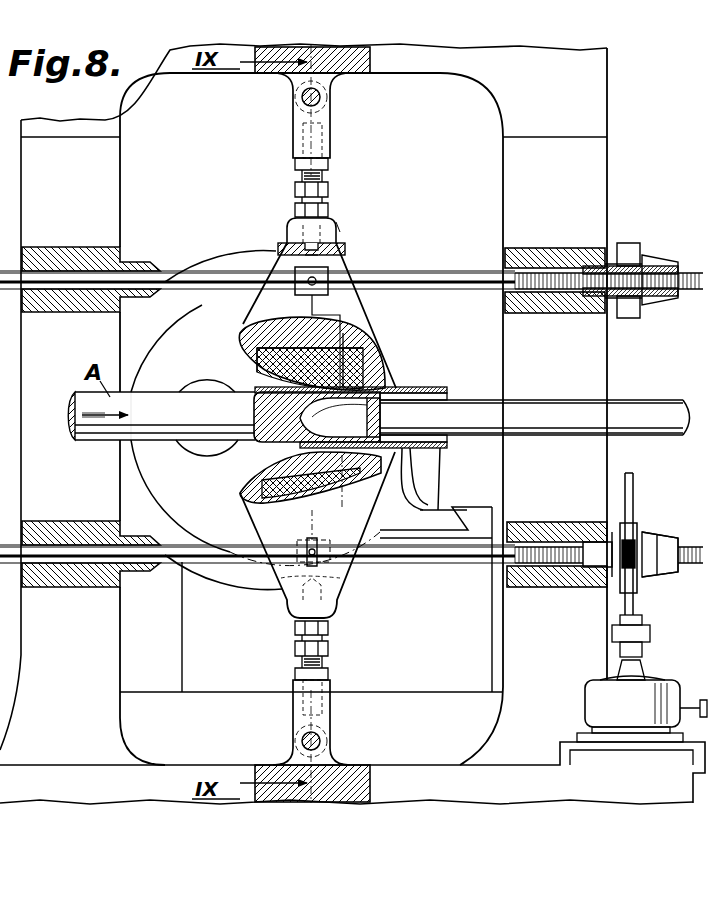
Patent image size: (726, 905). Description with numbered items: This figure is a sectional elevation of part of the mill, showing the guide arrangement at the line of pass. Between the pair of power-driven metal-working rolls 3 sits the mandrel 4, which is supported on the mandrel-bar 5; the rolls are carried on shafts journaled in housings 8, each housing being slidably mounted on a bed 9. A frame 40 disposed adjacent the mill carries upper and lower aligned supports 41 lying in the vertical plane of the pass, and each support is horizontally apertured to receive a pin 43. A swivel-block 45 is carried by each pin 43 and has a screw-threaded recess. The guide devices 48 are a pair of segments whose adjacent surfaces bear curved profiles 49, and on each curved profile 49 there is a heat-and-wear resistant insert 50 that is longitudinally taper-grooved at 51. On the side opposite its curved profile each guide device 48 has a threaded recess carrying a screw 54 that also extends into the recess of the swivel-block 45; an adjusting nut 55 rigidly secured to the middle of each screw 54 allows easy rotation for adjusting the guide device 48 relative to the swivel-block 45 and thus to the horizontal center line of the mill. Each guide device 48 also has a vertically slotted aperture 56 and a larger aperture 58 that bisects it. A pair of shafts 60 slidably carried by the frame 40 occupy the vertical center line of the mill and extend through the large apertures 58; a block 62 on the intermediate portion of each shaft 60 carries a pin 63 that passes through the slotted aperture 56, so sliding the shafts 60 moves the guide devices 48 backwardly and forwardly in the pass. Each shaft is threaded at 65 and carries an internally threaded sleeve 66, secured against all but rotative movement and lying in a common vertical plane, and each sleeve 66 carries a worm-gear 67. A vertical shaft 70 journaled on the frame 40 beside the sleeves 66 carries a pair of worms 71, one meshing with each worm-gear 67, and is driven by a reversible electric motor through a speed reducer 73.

The metal-working rolls 3 is at (147, 480).
The mandrel 4 is at (317, 417).
The mandrel-bar 5 is at (465, 407).
The housings 8 is at (402, 470).
The bed 9 is at (485, 518).
The frame 40 is at (595, 112).
The supports 41 is at (292, 84).
The pin 43 is at (322, 97).
The swivel-block 45 is at (294, 140).
The guide devices 48 is at (246, 343).
The curved profiles 49 is at (388, 365).
The heat-and-wear resistant insert 50 is at (286, 356).
The taper groove 51 is at (252, 374).
The screw 54 is at (300, 177).
The adjusting nut 55 is at (329, 188).
The vertically slotted aperture 56 is at (322, 262).
The aperture 58 is at (373, 250).
The shafts 60 is at (168, 272).
The block 62 is at (330, 288).
The pin 63 is at (305, 264).
The threaded portion 65 is at (556, 262).
The internally threaded sleeve 66 is at (592, 300).
The worm-gear 67 is at (632, 316).
The vertical shaft 70 is at (636, 492).
The worms 71 is at (640, 547).
The speed reducer 73 is at (597, 707).